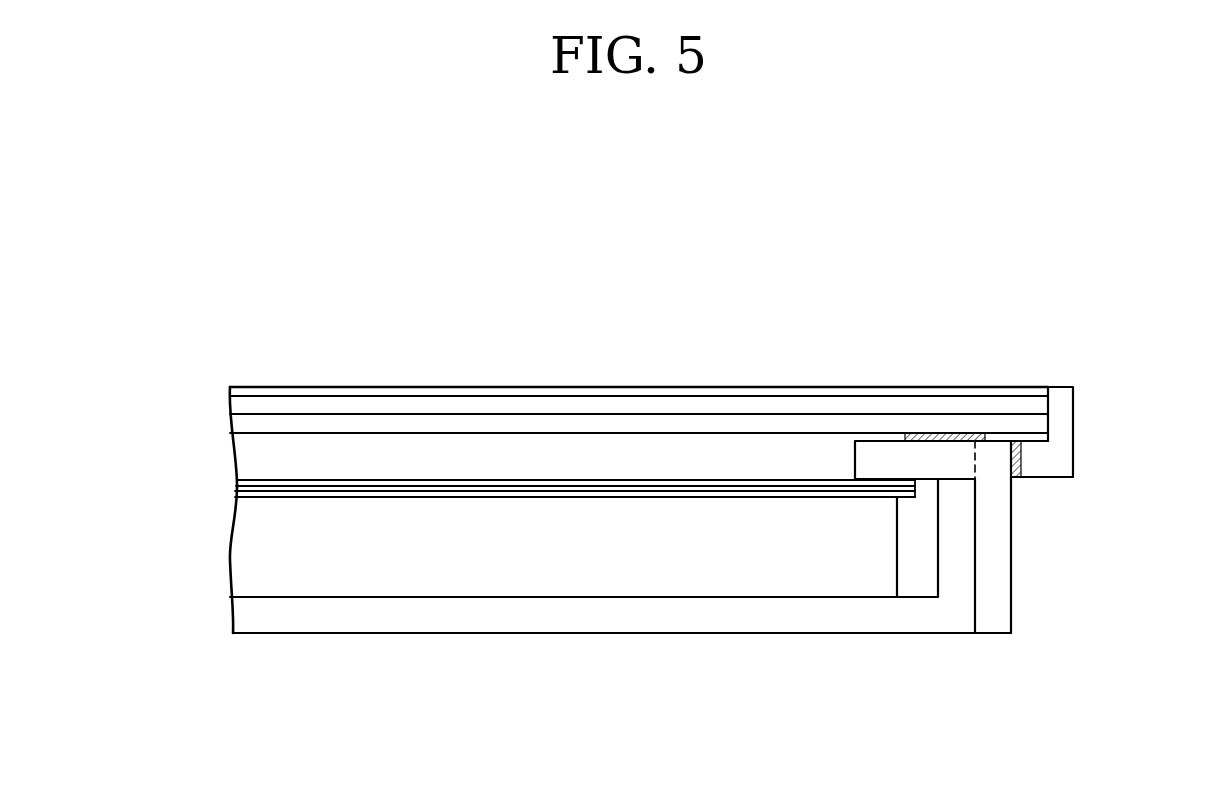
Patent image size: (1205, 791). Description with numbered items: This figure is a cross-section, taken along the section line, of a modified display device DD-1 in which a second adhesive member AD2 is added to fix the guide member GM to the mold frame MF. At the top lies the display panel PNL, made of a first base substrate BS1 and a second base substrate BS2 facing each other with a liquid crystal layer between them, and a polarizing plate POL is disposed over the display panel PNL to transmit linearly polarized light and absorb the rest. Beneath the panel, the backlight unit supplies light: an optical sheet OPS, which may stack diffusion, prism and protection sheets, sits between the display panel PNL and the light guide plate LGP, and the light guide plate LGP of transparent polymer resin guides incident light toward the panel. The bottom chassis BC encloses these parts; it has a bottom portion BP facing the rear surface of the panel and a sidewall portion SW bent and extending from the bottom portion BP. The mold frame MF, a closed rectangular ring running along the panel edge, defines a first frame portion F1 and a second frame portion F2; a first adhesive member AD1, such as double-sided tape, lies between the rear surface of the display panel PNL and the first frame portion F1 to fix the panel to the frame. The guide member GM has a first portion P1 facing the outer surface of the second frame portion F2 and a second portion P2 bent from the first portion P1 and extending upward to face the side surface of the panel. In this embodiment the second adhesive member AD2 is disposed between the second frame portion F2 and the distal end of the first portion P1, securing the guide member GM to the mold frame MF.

The display device DD-1 is at (812, 274).
The display panel PNL is at (132, 393).
The polarizing plate POL is at (242, 392).
The second base substrate BS2 is at (242, 407).
The first base substrate BS1 is at (242, 427).
The optical sheet OPS is at (229, 487).
The light guide plate LGP is at (243, 552).
The first adhesive member AD1 is at (943, 437).
The second adhesive member AD2 is at (1015, 441).
The guide member GM is at (1150, 397).
The first portion P1 is at (1040, 468).
The second portion P2 is at (1065, 415).
The mold frame MF is at (1150, 535).
The first frame portion F1 is at (927, 480).
The second frame portion F2 is at (990, 607).
The bottom chassis BC is at (940, 710).
The bottom portion BP is at (862, 625).
The sidewall portion SW is at (935, 568).